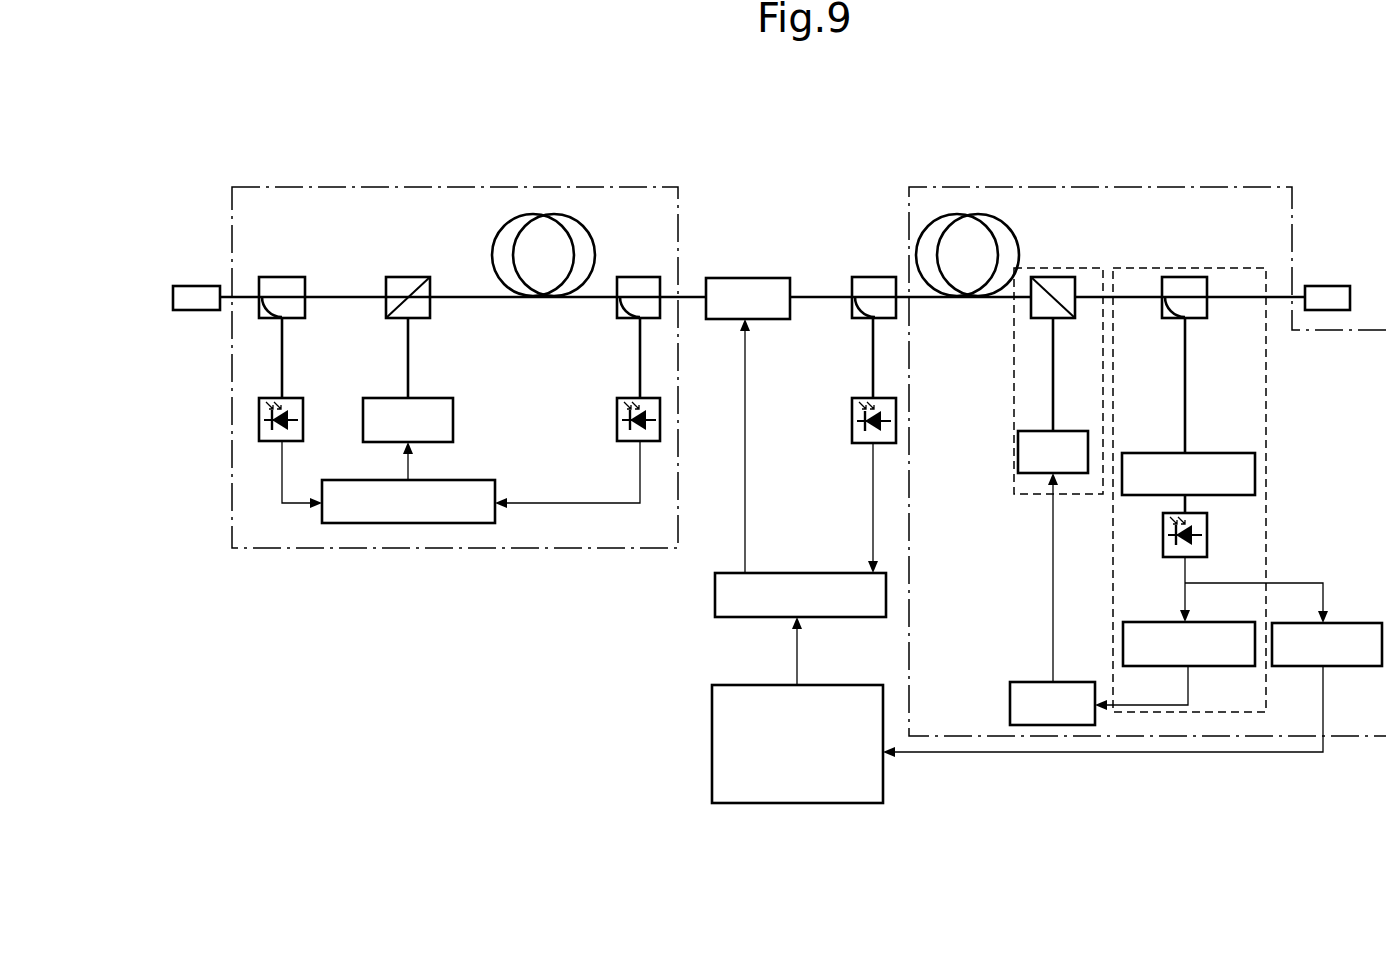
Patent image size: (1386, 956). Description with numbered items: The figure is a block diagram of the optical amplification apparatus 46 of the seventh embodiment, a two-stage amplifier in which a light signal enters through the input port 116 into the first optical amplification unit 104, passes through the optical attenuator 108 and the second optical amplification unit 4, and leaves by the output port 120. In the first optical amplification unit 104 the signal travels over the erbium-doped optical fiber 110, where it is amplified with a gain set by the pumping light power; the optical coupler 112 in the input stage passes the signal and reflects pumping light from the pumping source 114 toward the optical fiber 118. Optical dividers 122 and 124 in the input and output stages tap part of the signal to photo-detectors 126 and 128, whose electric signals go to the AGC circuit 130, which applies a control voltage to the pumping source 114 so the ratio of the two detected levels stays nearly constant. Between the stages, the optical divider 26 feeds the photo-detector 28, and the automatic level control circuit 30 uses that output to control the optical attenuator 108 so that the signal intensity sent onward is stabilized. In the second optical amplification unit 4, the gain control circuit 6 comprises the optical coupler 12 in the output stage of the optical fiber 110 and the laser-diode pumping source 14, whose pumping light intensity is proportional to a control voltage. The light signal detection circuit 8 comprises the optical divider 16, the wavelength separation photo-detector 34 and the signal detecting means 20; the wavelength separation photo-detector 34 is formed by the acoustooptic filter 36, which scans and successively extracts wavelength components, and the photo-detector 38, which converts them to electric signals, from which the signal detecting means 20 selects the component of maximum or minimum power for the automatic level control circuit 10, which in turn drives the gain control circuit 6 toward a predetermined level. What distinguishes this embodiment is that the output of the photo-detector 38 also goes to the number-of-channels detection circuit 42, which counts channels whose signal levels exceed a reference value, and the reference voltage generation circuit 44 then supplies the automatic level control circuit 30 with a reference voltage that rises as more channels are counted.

The second optical amplification unit 4 is at (1128, 187).
The gain control circuit 6 is at (1014, 394).
The light signal detection circuit 8 is at (1267, 352).
The automatic level control circuit 10 is at (1022, 680).
The optical coupler 12 is at (1052, 276).
The pumping source 14 is at (1070, 430).
The optical divider 16 is at (1186, 276).
The signal detecting means 20 is at (1155, 622).
The optical divider 26 is at (876, 276).
The photo-detector 28 is at (855, 397).
The automatic level control circuit 30 is at (832, 572).
The wavelength separation photo-detector 34 is at (1251, 503).
The acoustooptic filter 36 is at (1258, 472).
The photo-detector 38 is at (1209, 535).
The number-of-channels detection circuit 42 is at (1340, 622).
The reference voltage generation circuit 44 is at (770, 684).
The optical amplification apparatus 46 is at (767, 141).
The first optical amplification unit 104 is at (360, 187).
The optical attenuator 108 is at (762, 277).
The optical fiber 110 is at (572, 196).
The optical coupler 112 is at (408, 276).
The pumping source 114 is at (443, 398).
The input port 116 is at (190, 285).
The optical fiber 118 is at (508, 215).
The output port 120 is at (1328, 285).
The optical divider 122 is at (283, 276).
The optical divider 124 is at (640, 276).
The photo-detector 126 is at (302, 398).
The photo-detector 128 is at (617, 398).
The AGC circuit 130 is at (475, 480).